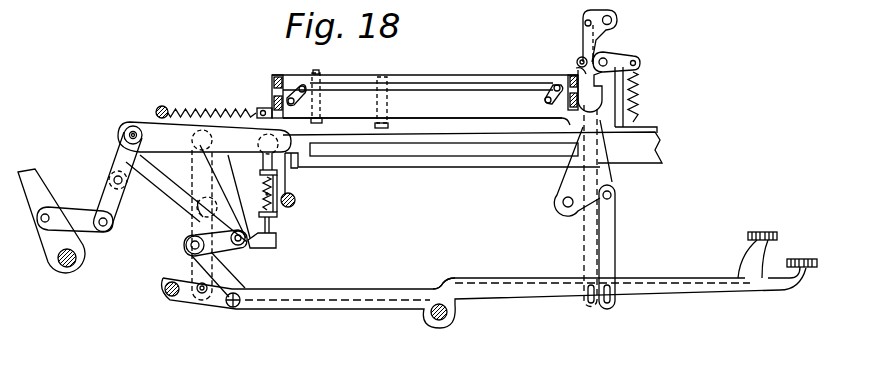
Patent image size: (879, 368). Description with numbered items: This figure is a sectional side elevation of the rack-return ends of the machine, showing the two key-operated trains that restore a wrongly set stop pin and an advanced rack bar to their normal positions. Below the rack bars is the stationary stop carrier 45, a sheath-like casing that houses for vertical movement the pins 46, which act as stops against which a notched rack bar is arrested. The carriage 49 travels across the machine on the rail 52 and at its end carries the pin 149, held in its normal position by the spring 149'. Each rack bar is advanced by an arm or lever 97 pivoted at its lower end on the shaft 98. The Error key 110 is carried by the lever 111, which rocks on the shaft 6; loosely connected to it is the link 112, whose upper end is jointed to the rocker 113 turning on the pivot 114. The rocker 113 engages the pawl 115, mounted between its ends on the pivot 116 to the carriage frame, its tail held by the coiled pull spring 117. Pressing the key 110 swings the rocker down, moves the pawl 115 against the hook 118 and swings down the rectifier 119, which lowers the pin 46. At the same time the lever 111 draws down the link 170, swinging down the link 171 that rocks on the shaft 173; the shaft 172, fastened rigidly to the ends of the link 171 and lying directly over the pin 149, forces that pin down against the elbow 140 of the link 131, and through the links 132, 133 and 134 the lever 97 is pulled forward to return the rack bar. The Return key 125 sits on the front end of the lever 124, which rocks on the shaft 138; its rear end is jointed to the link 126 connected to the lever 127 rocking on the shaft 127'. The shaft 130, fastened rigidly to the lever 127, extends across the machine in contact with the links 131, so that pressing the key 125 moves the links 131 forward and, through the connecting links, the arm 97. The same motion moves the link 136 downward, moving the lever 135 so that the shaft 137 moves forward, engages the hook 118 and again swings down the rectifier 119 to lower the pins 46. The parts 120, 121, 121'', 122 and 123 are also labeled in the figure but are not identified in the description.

The shaft 6 is at (174, 302).
The stop carrier 45 is at (400, 76).
The pins 46 is at (321, 74).
The carriage 49 is at (354, 168).
The rail 52 is at (296, 203).
The arm or lever 97 is at (50, 248).
The shaft 98 is at (78, 266).
The key 110 is at (803, 258).
The lever 111 is at (434, 283).
The link 112 is at (586, 249).
The rocker 113 is at (604, 30).
The pivot 114 is at (614, 17).
The pawl 115 is at (577, 70).
The pivot 116 is at (614, 53).
The coiled pull spring 117 is at (640, 114).
The hook 118 is at (624, 90).
The rectifier 119 is at (440, 108).
The pivot 120 is at (578, 56).
The lever 121 is at (282, 84).
The lever 121'' is at (544, 110).
The spring 122 is at (212, 110).
The pin 123 is at (160, 106).
The lever 124 is at (480, 287).
The key 125 is at (770, 229).
The link 126 is at (237, 266).
The lever 127 is at (199, 243).
The shaft 127' is at (275, 251).
The shaft 130 is at (198, 207).
The link 131 is at (229, 170).
The link 132 is at (147, 182).
The link 133 is at (115, 163).
The link 134 is at (74, 208).
The lever 135 is at (614, 178).
The link 136 is at (616, 242).
The shaft 137 is at (599, 122).
The shaft 138 is at (441, 322).
The elbow 140 is at (270, 243).
The pin 149 is at (287, 195).
The spring 149' is at (255, 192).
The link 170 is at (196, 187).
The link 171 is at (143, 123).
The shaft 172 is at (283, 138).
The shaft 173 is at (129, 134).